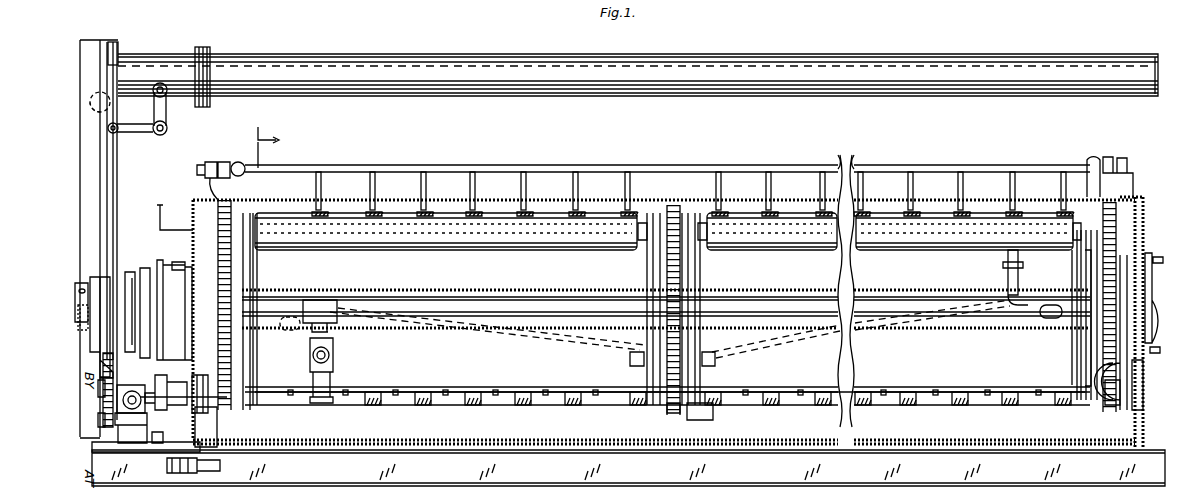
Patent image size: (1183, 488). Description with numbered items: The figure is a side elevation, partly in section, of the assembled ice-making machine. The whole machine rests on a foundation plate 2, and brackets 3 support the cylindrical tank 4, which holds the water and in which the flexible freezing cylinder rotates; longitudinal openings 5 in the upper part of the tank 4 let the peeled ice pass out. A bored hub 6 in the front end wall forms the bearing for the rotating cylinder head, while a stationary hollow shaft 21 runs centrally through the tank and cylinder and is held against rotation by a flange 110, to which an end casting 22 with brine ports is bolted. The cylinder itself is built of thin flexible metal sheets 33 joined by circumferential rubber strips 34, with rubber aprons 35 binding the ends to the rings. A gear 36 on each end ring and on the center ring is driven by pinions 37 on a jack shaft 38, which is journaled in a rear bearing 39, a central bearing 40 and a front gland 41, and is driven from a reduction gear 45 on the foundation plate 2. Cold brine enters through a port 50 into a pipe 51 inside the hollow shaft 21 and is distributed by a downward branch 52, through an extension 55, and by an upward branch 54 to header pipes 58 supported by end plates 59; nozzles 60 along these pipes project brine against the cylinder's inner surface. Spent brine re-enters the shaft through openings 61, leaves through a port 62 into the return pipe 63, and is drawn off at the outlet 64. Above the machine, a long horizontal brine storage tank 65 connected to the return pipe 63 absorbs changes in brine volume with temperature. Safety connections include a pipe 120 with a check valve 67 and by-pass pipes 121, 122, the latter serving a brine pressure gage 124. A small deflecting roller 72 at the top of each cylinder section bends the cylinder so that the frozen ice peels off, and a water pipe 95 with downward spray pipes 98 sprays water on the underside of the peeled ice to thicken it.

The foundation plate 2 is at (140, 452).
The brackets 3 is at (244, 450).
The cylindrical tank 4 is at (860, 423).
The longitudinal openings 5 is at (274, 147).
The bored hub 6 is at (158, 272).
The hollow shaft 21 is at (127, 292).
The end casting 22 is at (78, 288).
The sheets 33 is at (345, 406).
The circumferential strips 34 is at (373, 392).
The aprons 35 is at (642, 212).
The gear 36 is at (218, 240).
The pinions 37 is at (216, 372).
The jack shaft 38 is at (150, 387).
The bearing 39 is at (1120, 405).
The bearing 40 is at (713, 420).
The gland 41 is at (207, 400).
The reduction gear 45 is at (165, 452).
The port 50 is at (77, 311).
The pipe 51 is at (530, 310).
The branch pipe 52 is at (330, 334).
The branch pipe 54 is at (1020, 263).
The extension 55 is at (333, 354).
The header pipes 58 is at (480, 388).
The end plates 59 is at (256, 372).
The nozzles 60 is at (290, 397).
The openings 61 is at (285, 332).
The port 62 is at (1157, 272).
The return pipe 63 is at (112, 163).
The outlet 64 is at (89, 103).
The brine storage tank 65 is at (422, 54).
The check valve 67 is at (170, 124).
The deflecting roller 72 is at (476, 252).
The pipe 95 is at (798, 166).
The spray pipe 98 is at (470, 182).
The flange 110 is at (108, 283).
The pipe 120 is at (168, 130).
The by-pass pipe 121 is at (162, 83).
The by-pass pipe 122 is at (108, 129).
The brine pressure gage 124 is at (120, 46).